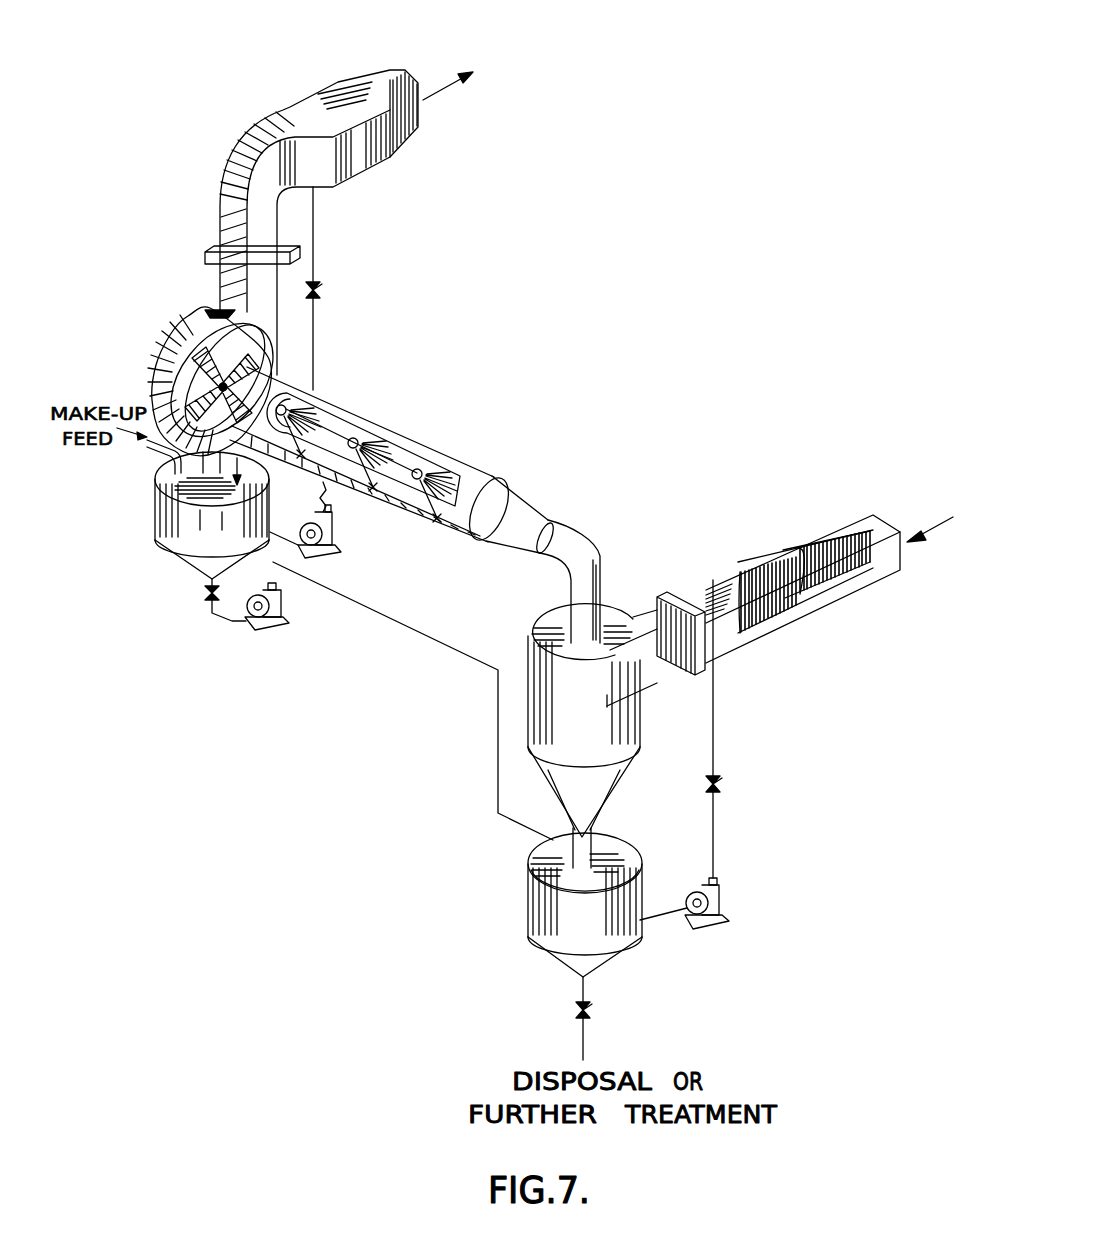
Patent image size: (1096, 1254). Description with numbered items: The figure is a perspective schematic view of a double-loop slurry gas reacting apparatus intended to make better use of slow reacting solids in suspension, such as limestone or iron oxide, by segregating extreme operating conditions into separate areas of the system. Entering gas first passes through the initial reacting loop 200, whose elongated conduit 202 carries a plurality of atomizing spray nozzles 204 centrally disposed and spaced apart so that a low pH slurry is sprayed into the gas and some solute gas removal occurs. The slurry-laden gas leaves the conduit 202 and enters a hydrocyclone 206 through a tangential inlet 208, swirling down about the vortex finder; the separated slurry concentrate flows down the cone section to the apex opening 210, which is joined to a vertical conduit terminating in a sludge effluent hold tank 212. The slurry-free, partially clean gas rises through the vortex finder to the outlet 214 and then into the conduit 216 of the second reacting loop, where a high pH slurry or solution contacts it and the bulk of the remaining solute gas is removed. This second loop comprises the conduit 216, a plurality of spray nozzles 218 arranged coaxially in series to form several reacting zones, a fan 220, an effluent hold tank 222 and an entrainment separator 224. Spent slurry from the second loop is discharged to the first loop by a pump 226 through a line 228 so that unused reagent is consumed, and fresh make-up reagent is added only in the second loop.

The initial reacting loop 200 is at (780, 601).
The elongated conduit 202 is at (805, 610).
The atomizing spray nozzles 204 is at (835, 588).
The hydrocyclone 206 is at (612, 732).
The tangential inlet 208 is at (665, 683).
The apex opening 210 is at (600, 836).
The sludge effluent hold tank 212 is at (527, 903).
The outlet 214 is at (598, 550).
The conduit 216 is at (432, 442).
The spray nozzles 218 is at (317, 392).
The fan 220 is at (174, 345).
The effluent hold tank 222 is at (153, 532).
The entrainment separator 224 is at (383, 157).
The pump 226 is at (260, 630).
The line 228 is at (403, 625).